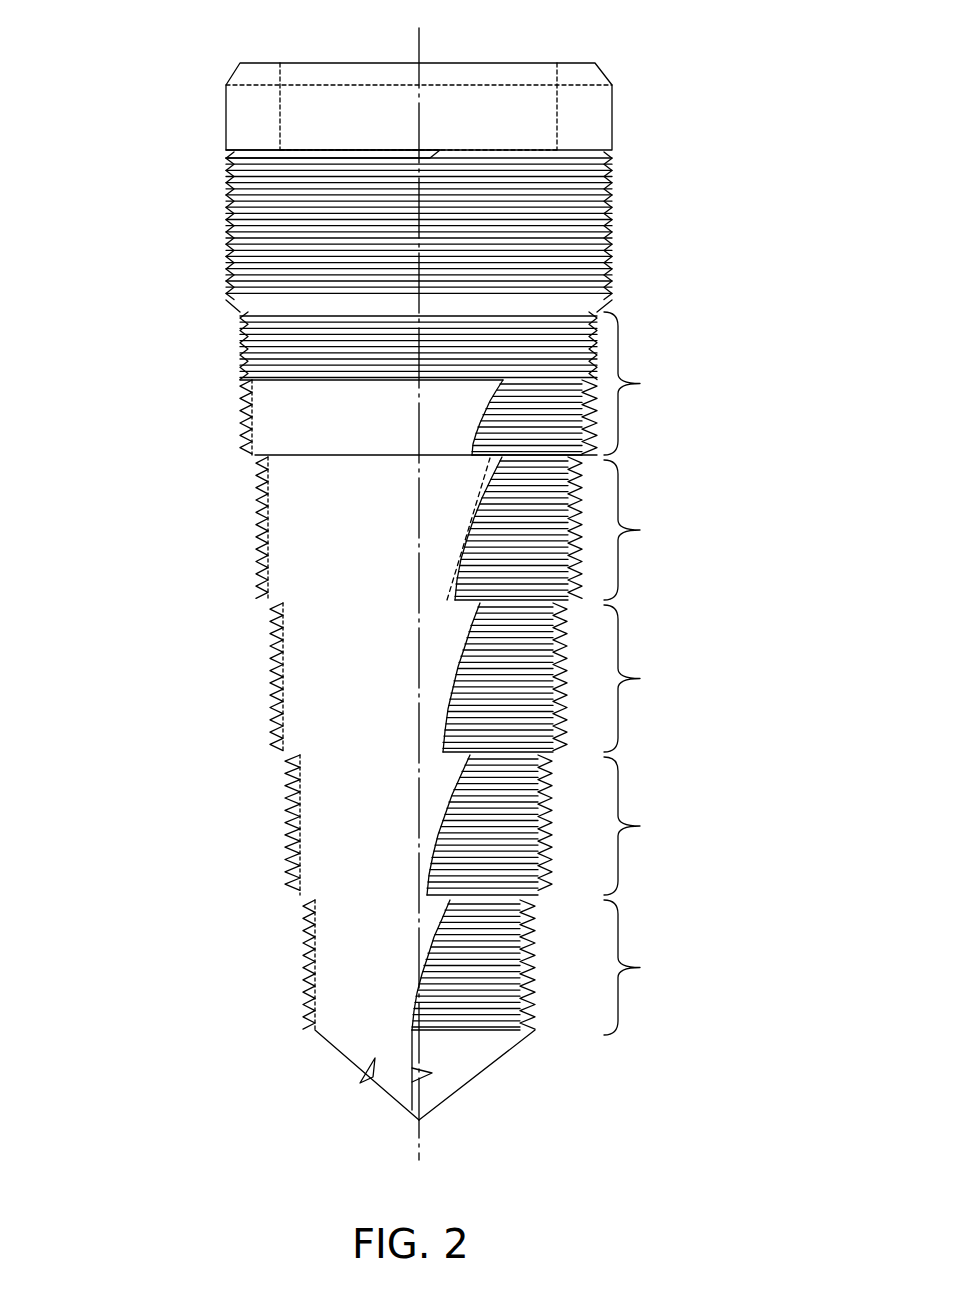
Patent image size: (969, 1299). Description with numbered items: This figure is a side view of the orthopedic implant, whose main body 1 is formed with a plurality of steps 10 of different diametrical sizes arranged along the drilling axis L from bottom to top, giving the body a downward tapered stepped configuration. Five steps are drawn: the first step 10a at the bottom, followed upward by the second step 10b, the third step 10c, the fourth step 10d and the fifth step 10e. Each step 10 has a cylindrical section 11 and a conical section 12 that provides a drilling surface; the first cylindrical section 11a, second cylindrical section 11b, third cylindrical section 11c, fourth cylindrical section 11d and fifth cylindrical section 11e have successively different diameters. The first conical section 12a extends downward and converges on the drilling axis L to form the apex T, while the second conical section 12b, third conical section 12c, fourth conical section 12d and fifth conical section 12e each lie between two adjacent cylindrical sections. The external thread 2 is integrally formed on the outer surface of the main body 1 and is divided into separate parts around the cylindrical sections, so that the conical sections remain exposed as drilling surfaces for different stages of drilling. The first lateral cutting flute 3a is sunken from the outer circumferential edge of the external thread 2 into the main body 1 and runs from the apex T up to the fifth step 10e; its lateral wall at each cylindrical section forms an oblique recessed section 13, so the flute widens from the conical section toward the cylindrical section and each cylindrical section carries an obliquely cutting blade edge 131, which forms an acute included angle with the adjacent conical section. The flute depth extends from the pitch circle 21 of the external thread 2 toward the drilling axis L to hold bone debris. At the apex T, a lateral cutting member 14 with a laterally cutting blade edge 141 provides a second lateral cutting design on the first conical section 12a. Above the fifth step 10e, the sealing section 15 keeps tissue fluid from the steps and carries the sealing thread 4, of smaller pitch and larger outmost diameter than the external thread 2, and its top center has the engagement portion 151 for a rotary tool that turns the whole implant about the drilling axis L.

The main body 1 is at (284, 43).
The drilling axis L is at (417, 582).
The sealing section 15 is at (612, 152).
The engagement portion 151 is at (280, 108).
The sealing thread 4 is at (226, 240).
The steps 10 is at (484, 673).
The fifth step 10e is at (488, 383).
The fourth step 10d is at (596, 528).
The third step 10c is at (589, 677).
The second step 10b is at (486, 825).
The first step 10a is at (484, 965).
The cylindrical section 11 is at (200, 675).
The fifth cylindrical section 11e is at (240, 385).
The fourth cylindrical section 11d is at (258, 532).
The third cylindrical section 11c is at (275, 684).
The second cylindrical section 11b is at (292, 832).
The first cylindrical section 11a is at (305, 982).
The conical section 12 is at (206, 714).
The fifth conical section 12e is at (250, 452).
The fourth conical section 12d is at (268, 600).
The third conical section 12c is at (285, 746).
The second conical section 12b is at (300, 893).
The first conical section 12a is at (318, 1047).
The first lateral cutting flute 3a is at (320, 642).
The obliquely cutting blade edge 131 is at (423, 878).
The oblique recessed section 13 is at (435, 900).
The external thread 2 is at (545, 868).
The pitch circle 21 is at (553, 832).
The lateral cutting member 14 is at (373, 1062).
The laterally cutting blade edge 141 is at (432, 1068).
The apex T is at (420, 1120).